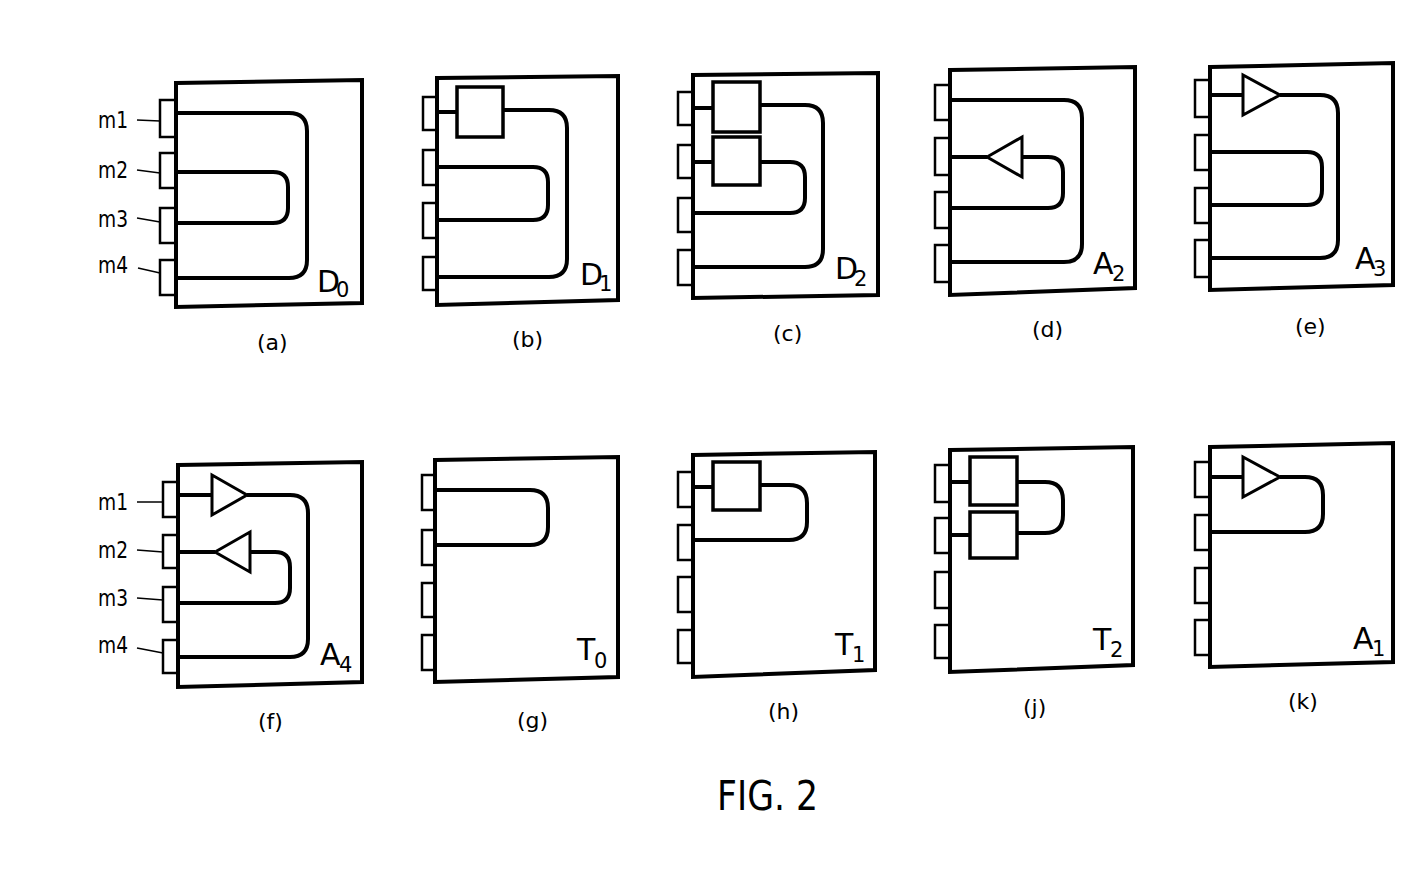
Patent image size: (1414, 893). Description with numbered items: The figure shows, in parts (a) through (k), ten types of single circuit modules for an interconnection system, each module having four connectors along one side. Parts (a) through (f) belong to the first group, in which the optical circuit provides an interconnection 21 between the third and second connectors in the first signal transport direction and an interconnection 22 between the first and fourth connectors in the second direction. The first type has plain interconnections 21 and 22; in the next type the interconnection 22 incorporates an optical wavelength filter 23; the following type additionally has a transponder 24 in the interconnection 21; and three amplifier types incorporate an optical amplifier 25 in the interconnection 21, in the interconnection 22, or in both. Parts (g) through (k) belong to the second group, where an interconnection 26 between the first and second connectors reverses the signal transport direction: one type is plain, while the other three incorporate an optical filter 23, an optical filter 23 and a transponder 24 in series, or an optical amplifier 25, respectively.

The interconnection 21 is at (265, 170).
The interconnection 22 is at (243, 113).
The optical wavelength filter 23 is at (488, 86).
The transponder 24 is at (762, 140).
The optical amplifier 25 is at (1025, 135).
The interconnection 26 is at (532, 488).